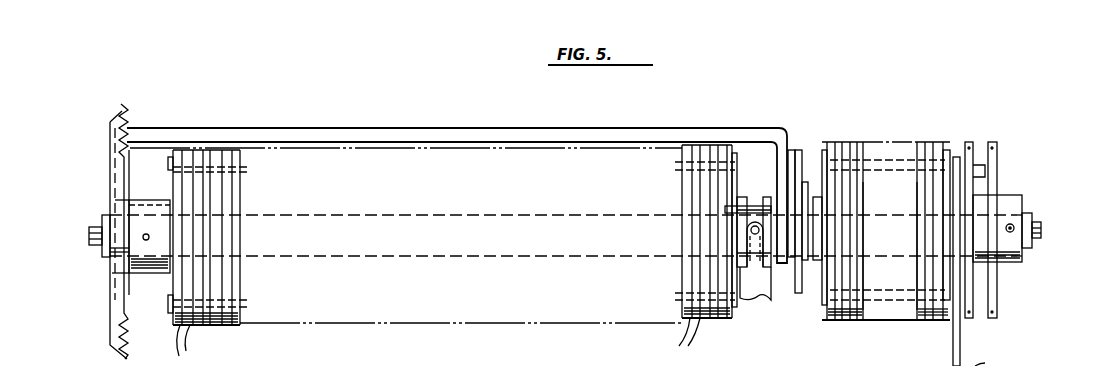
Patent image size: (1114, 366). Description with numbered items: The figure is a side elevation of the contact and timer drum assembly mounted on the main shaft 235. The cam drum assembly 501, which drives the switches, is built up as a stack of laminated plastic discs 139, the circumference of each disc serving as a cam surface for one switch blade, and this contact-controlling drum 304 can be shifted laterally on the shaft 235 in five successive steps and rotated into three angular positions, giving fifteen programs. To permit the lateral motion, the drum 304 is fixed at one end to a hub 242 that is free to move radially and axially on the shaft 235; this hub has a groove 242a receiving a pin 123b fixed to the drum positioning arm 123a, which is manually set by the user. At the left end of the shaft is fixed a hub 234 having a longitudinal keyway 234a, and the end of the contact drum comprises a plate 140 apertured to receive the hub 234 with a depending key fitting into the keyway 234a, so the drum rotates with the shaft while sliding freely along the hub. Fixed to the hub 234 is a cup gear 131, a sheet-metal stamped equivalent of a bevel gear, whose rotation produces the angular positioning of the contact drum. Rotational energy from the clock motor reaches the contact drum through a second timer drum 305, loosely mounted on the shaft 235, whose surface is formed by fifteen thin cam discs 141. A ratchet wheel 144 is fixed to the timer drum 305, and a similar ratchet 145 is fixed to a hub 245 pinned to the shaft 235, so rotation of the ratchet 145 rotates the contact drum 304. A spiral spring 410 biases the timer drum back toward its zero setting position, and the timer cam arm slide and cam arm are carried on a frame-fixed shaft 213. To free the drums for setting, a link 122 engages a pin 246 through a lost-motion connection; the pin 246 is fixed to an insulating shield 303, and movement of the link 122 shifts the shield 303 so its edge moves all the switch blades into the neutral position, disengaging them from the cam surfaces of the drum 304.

The cup gear 131 is at (120, 117).
The shaft 235 is at (104, 218).
The hub 234 is at (134, 272).
The longitudinal keyway 234a is at (160, 189).
The plate 140 is at (172, 288).
The laminated plastic discs 139 is at (438, 339).
The cam drum assembly 501 is at (320, 126).
The insulating shield 303 is at (483, 128).
The contact-controlling drum 304 is at (480, 322).
The hub 242 is at (743, 197).
The groove 242a is at (737, 208).
The pin 123b is at (751, 230).
The drum positioning arm 123a is at (762, 292).
The pin 246 is at (792, 150).
The link 122 is at (800, 290).
The discs 141 is at (832, 142).
The spiral spring 410 is at (956, 157).
The ratchet wheel 144 is at (970, 142).
The ratchet 145 is at (997, 155).
The hub 245 is at (1005, 202).
The timer drum 305 is at (903, 318).
The shaft 213 is at (972, 365).